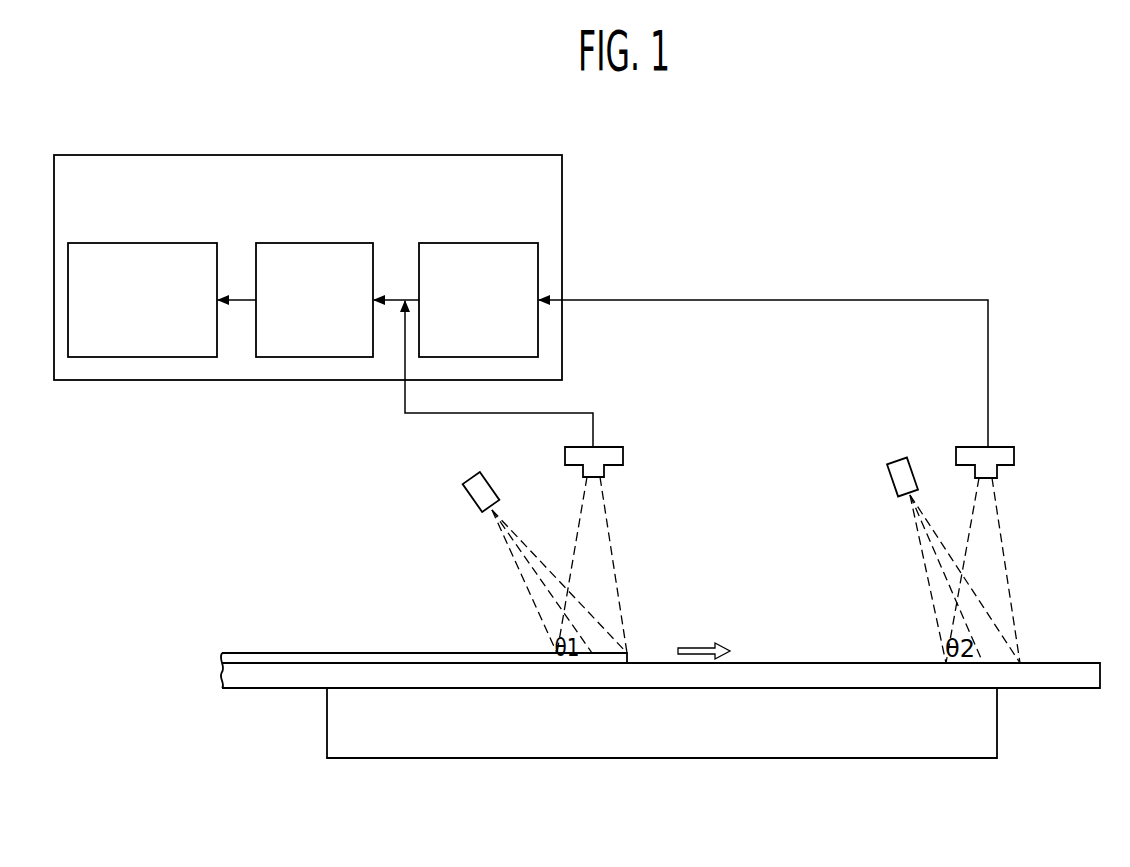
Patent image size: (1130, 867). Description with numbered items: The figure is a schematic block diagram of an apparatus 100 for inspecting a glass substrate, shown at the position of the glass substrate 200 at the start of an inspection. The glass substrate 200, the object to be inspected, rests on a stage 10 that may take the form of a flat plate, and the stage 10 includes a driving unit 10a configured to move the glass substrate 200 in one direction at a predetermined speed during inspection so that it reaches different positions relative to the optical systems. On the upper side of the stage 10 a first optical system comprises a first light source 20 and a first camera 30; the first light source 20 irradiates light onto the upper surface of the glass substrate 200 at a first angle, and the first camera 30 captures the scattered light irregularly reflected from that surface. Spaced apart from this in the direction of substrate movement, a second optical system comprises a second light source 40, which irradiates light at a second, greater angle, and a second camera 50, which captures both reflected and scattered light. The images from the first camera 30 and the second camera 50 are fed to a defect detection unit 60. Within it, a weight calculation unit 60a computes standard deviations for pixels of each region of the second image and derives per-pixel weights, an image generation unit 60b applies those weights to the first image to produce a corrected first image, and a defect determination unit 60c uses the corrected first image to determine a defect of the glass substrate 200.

The apparatus for inspecting a glass substrate 100 is at (985, 148).
The defect detection unit 60 is at (452, 155).
The weight calculation unit 60a is at (477, 243).
The image generation unit 60b is at (373, 243).
The defect determination unit 60c is at (140, 243).
The first light source 20 is at (468, 491).
The first camera 30 is at (623, 455).
The second light source 40 is at (888, 476).
The second camera 50 is at (1014, 455).
The glass substrate 200 is at (318, 652).
The stage 10 is at (1035, 680).
The driving unit 10a is at (798, 758).